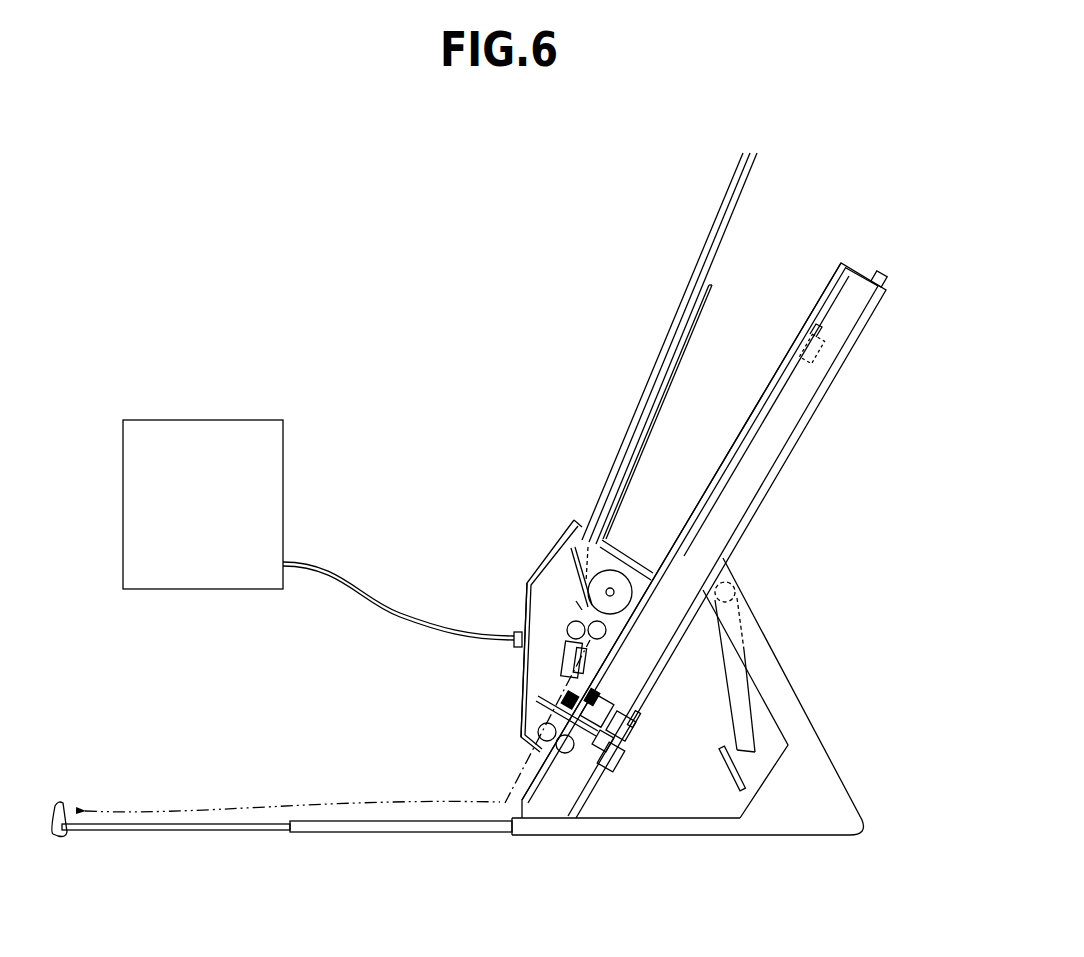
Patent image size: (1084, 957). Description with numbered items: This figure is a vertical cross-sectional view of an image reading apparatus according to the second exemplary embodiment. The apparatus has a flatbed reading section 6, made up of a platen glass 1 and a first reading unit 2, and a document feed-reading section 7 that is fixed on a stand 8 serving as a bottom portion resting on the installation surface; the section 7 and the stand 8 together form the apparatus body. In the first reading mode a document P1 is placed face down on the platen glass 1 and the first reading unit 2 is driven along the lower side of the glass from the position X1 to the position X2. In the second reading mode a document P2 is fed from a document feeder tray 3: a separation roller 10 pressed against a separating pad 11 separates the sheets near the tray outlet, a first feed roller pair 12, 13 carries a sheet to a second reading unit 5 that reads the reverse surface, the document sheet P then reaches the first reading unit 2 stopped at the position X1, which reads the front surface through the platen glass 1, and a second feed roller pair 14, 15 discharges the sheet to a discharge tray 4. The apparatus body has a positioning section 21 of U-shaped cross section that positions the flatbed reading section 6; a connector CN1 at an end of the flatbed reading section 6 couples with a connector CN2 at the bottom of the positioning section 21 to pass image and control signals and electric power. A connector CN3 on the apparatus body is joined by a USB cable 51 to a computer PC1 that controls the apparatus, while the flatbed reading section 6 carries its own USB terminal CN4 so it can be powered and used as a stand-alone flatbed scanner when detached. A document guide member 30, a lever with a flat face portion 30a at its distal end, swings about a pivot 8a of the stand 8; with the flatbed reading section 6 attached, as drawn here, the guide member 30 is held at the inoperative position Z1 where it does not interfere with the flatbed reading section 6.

The platen glass 1 is at (722, 500).
The first reading unit 2 is at (610, 746).
The document feeder tray 3 is at (706, 321).
The discharge tray 4 is at (170, 834).
The second reading unit 5 is at (526, 602).
The flatbed reading section 6 is at (794, 468).
The document feed-reading section 7 is at (518, 670).
The stand 8 is at (720, 838).
The pivot 8a is at (736, 594).
The separation roller 10 is at (629, 606).
The separating pad 11 is at (572, 546).
The first feed roller pair 12 is at (607, 637).
The first feed roller pair 13 is at (564, 618).
The second feed roller pair 14 is at (567, 756).
The second feed roller pair 15 is at (538, 731).
The positioning section 21 is at (636, 718).
The document guide member 30 is at (748, 762).
The flat face portion 30a is at (723, 778).
The USB cable 51 is at (374, 583).
The connector CN1 is at (607, 742).
The connector CN2 is at (592, 750).
The connector CN3 is at (516, 634).
The USB terminal CN4 is at (882, 272).
The document sheet P is at (346, 802).
The document P1 is at (742, 428).
The document P2 is at (702, 253).
The computer PC1 is at (203, 504).
The position X1 is at (618, 726).
The position X2 is at (826, 352).
The inoperative position Z1 is at (786, 748).